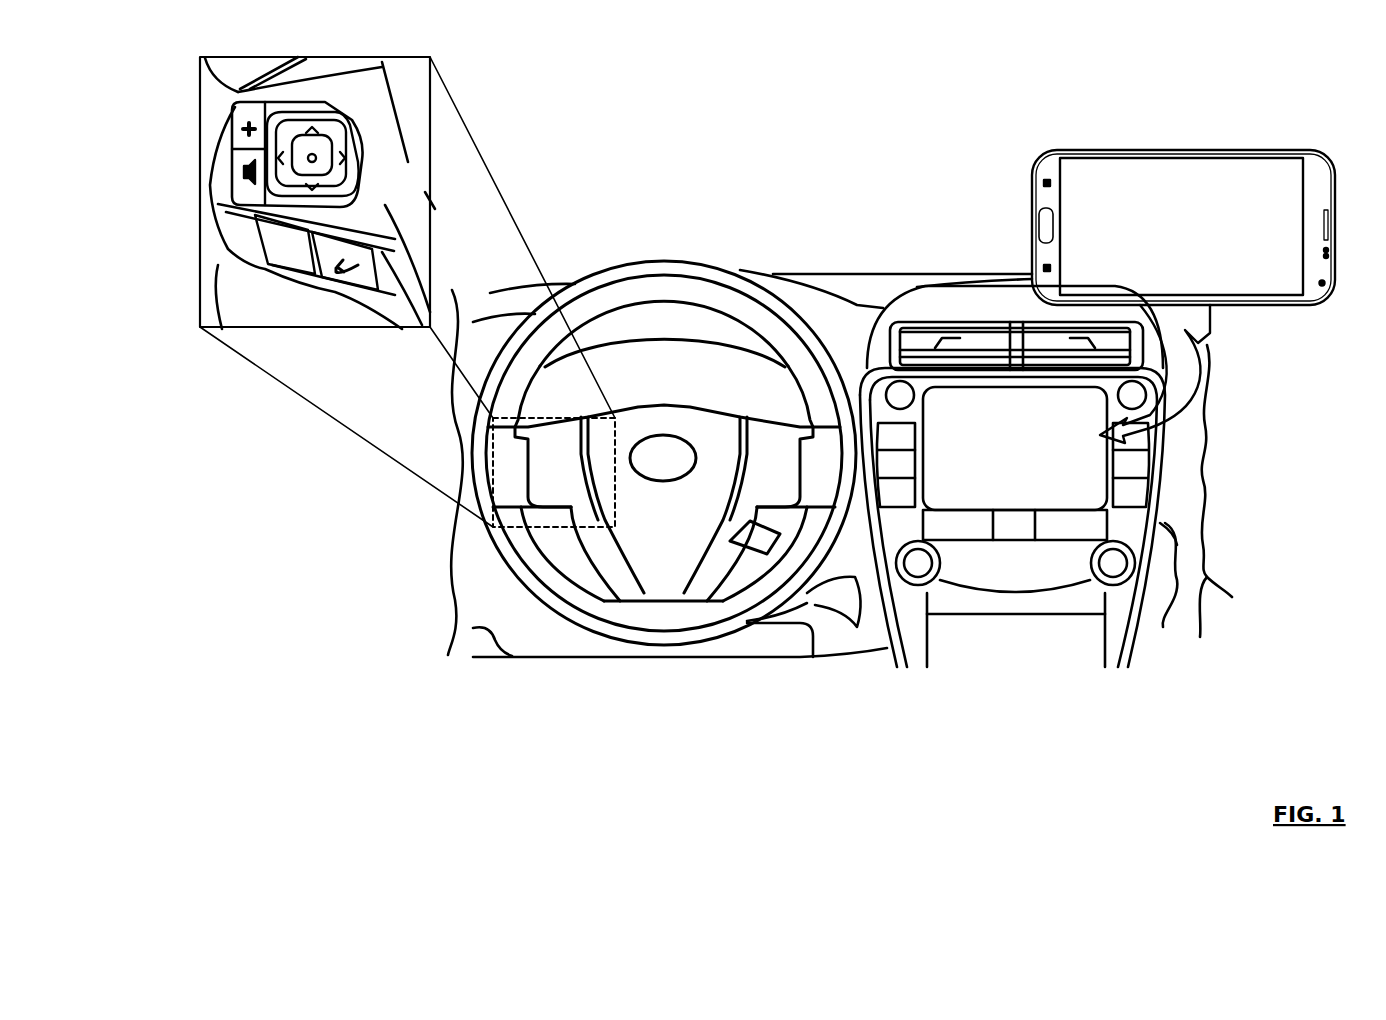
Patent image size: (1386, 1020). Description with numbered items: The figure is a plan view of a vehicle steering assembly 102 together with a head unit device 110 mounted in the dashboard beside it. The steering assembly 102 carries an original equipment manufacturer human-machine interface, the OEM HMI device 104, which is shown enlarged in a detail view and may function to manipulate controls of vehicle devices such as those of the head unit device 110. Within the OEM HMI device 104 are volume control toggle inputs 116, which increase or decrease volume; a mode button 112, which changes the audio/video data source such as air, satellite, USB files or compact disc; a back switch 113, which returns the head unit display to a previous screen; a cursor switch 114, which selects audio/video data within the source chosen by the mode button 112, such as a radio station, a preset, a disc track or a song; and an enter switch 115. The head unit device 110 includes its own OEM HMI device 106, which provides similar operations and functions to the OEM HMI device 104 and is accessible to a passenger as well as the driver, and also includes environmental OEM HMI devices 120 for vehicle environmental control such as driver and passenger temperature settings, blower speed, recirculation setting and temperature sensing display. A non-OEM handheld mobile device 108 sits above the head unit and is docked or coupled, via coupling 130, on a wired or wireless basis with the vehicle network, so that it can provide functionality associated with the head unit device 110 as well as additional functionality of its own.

The steering assembly 102 is at (748, 632).
The OEM HMI device 104 is at (258, 193).
The OEM HMI device 106 is at (1013, 448).
The non-OEM handheld mobile device 108 is at (1103, 145).
The head unit device 110 is at (1088, 476).
The mode button 112 is at (290, 268).
The back switch 113 is at (353, 287).
The cursor switch 114 is at (360, 149).
The enter switch 115 is at (300, 102).
The volume control toggle inputs 116 is at (222, 178).
The environmental OEM HMI devices 120 is at (1207, 577).
The coupling 130 is at (1213, 360).